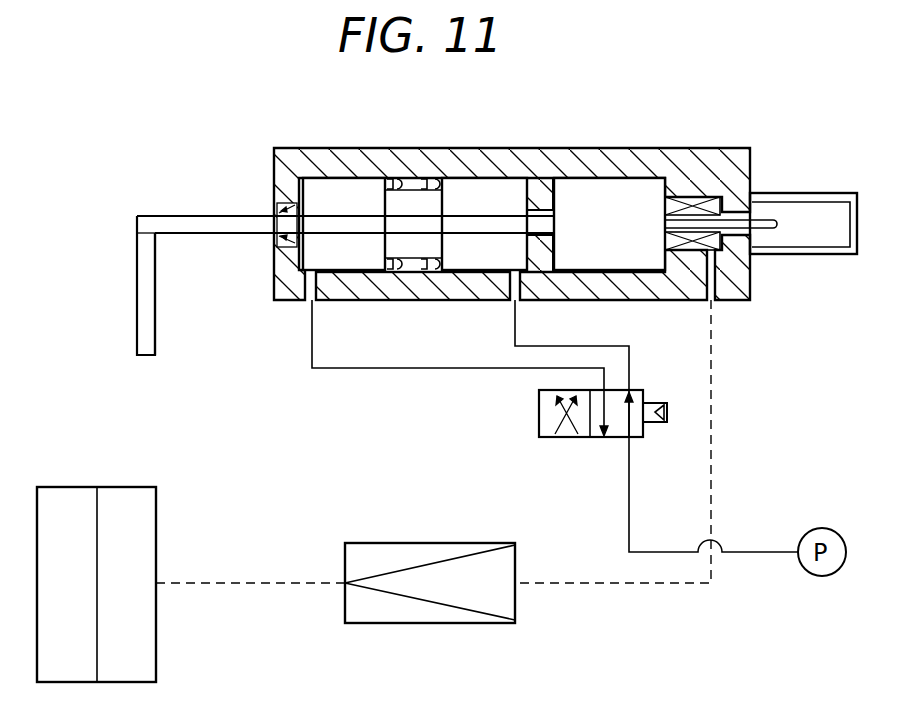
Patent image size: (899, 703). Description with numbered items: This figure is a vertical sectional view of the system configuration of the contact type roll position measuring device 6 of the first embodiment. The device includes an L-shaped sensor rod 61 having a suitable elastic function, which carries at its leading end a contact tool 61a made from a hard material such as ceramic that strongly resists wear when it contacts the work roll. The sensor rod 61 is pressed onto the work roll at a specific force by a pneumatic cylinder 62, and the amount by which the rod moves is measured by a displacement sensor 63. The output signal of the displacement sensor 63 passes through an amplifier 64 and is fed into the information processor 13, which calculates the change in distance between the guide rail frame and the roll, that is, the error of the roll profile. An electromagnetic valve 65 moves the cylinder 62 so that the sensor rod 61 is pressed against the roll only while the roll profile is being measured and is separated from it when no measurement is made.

The contact type roll position measuring device 6 is at (489, 131).
The sensor rod 61 is at (218, 215).
The contact tool 61a is at (139, 310).
The pneumatic cylinder 62 is at (410, 207).
The displacement sensor 63 is at (692, 202).
The amplifier 64 is at (485, 543).
The electromagnetic valve 65 is at (539, 411).
The information processor 13 is at (156, 502).